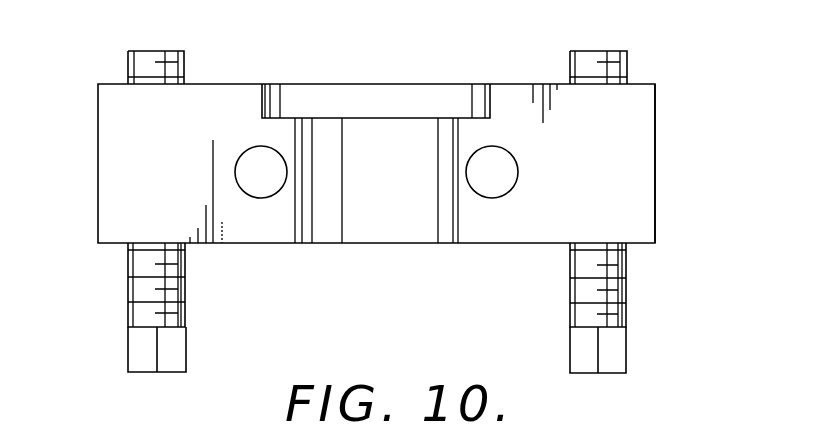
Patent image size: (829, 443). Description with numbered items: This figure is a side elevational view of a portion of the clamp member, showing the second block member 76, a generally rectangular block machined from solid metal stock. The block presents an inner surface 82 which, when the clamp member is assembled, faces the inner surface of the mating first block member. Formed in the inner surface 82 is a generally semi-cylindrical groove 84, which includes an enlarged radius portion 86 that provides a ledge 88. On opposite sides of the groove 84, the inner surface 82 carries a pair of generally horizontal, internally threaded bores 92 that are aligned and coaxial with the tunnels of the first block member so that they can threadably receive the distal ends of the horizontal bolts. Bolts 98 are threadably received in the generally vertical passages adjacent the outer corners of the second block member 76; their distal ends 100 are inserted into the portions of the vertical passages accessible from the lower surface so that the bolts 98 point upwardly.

The second block member 76 is at (108, 131).
The inner surface 82 is at (645, 142).
The semi-cylindrical groove 84 is at (295, 227).
The enlarged radius portion 86 is at (485, 97).
The ledge 88 is at (288, 117).
The bore 92 is at (247, 150).
The bolt 98 is at (132, 347).
The distal end 100 is at (157, 50).